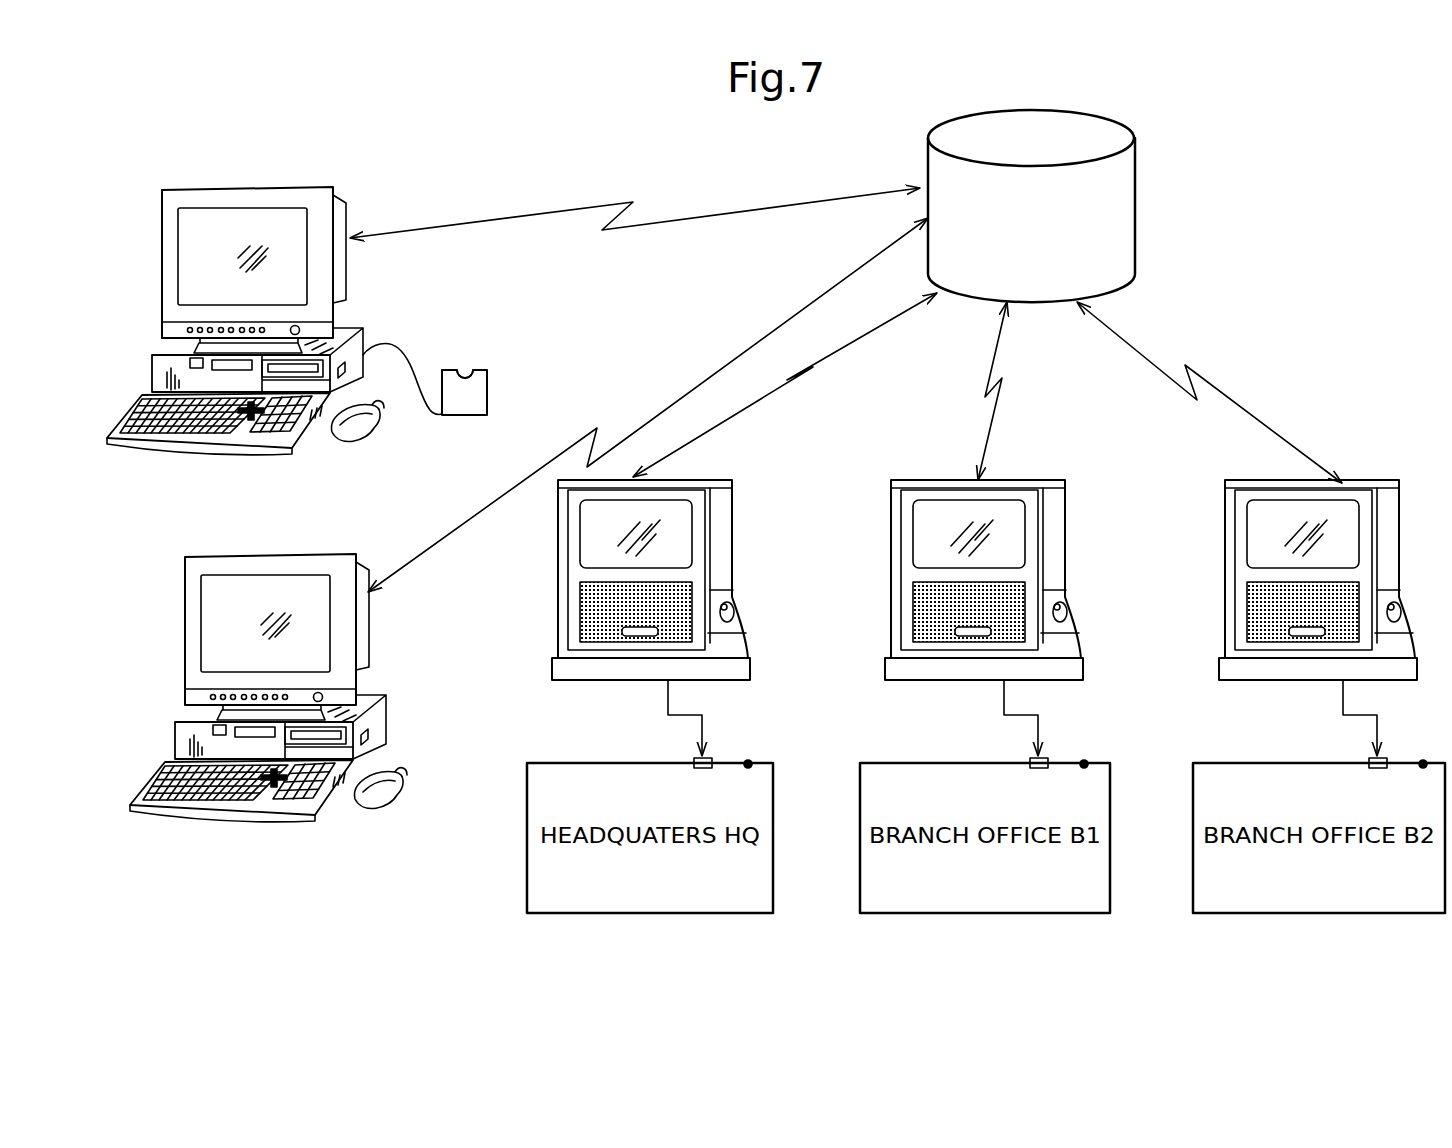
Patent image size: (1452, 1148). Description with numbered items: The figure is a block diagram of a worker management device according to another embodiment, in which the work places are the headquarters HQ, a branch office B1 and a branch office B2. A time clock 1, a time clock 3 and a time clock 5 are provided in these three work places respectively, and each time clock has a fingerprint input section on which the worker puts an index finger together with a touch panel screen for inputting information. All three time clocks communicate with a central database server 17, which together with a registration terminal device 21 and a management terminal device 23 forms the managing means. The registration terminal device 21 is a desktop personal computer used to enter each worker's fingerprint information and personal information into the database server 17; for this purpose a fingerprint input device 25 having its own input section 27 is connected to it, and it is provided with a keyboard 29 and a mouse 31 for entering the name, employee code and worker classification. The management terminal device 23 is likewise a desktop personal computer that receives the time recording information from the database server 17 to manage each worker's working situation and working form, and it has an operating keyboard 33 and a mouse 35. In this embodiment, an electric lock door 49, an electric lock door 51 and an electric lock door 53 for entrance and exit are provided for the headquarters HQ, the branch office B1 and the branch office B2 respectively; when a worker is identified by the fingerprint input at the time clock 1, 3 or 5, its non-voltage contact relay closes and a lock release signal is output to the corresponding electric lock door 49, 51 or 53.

The time clock 1 is at (722, 478).
The time clock 3 is at (1050, 478).
The time clock 5 is at (1385, 478).
The database server 17 is at (1135, 207).
The registration terminal device 21 is at (252, 185).
The management terminal device 23 is at (275, 552).
The fingerprint input device 25 is at (490, 388).
The input section 27 is at (465, 377).
The keyboard 29 is at (222, 442).
The mouse 31 is at (365, 442).
The operating keyboard 33 is at (245, 809).
The mouse 35 is at (357, 815).
The electric lock door 49 is at (748, 760).
The electric lock door 51 is at (1084, 760).
The electric lock door 53 is at (1423, 760).